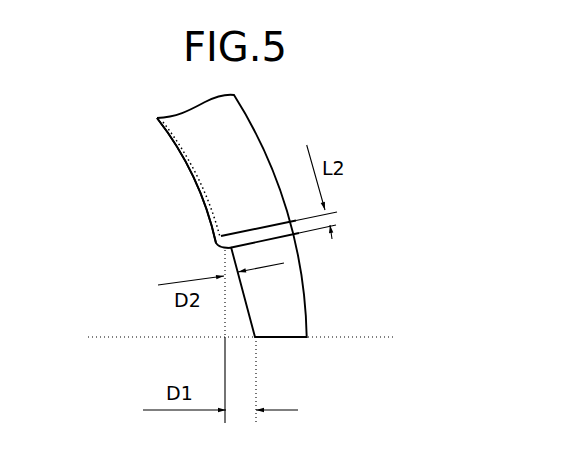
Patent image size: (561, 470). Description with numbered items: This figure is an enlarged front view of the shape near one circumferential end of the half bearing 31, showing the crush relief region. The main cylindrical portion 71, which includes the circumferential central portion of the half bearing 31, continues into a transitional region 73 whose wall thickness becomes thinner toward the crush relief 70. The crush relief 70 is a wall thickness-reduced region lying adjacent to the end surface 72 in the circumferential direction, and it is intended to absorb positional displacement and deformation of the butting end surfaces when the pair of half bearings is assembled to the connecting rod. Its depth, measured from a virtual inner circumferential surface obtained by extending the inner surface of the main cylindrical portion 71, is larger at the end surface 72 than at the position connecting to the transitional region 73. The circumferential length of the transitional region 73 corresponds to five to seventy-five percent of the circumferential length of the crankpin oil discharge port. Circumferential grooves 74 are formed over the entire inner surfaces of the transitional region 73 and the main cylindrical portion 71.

The half bearing 31 is at (327, 130).
The crush relief 70 is at (214, 320).
The main cylindrical portion 71 is at (171, 143).
The end surface 72 is at (293, 337).
The transitional region 73 is at (228, 250).
The circumferential groove 74 is at (188, 188).